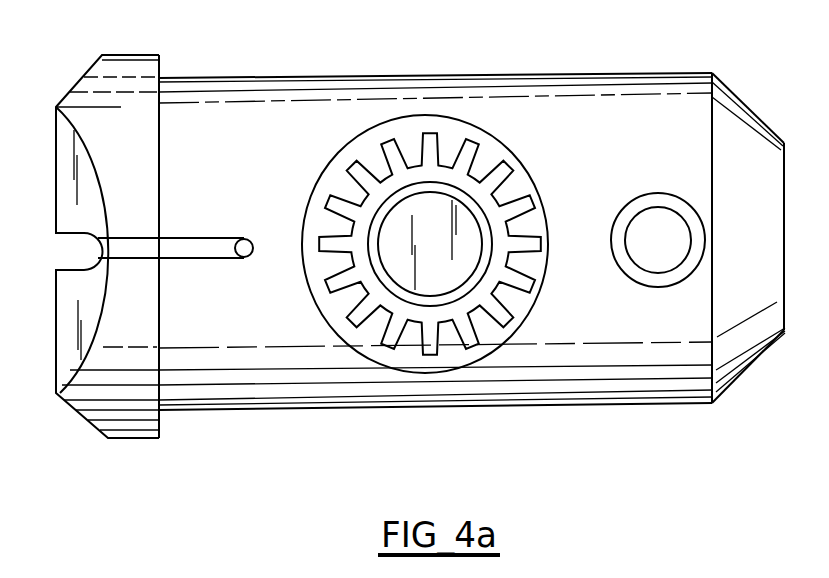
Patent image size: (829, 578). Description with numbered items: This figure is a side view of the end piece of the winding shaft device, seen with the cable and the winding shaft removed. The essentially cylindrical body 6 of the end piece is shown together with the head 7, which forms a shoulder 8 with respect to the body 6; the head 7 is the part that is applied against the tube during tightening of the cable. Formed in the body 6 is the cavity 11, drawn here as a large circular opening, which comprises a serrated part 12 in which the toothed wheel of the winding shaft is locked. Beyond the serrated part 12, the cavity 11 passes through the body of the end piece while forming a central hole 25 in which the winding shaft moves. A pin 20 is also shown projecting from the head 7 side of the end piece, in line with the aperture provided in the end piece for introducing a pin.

The end piece body 6 is at (583, 102).
The head 7 is at (92, 107).
The shoulder 8 is at (160, 72).
The cavity 11 is at (353, 348).
The serrated part 12 is at (482, 335).
The pin 20 is at (246, 257).
The hole 25 is at (478, 215).